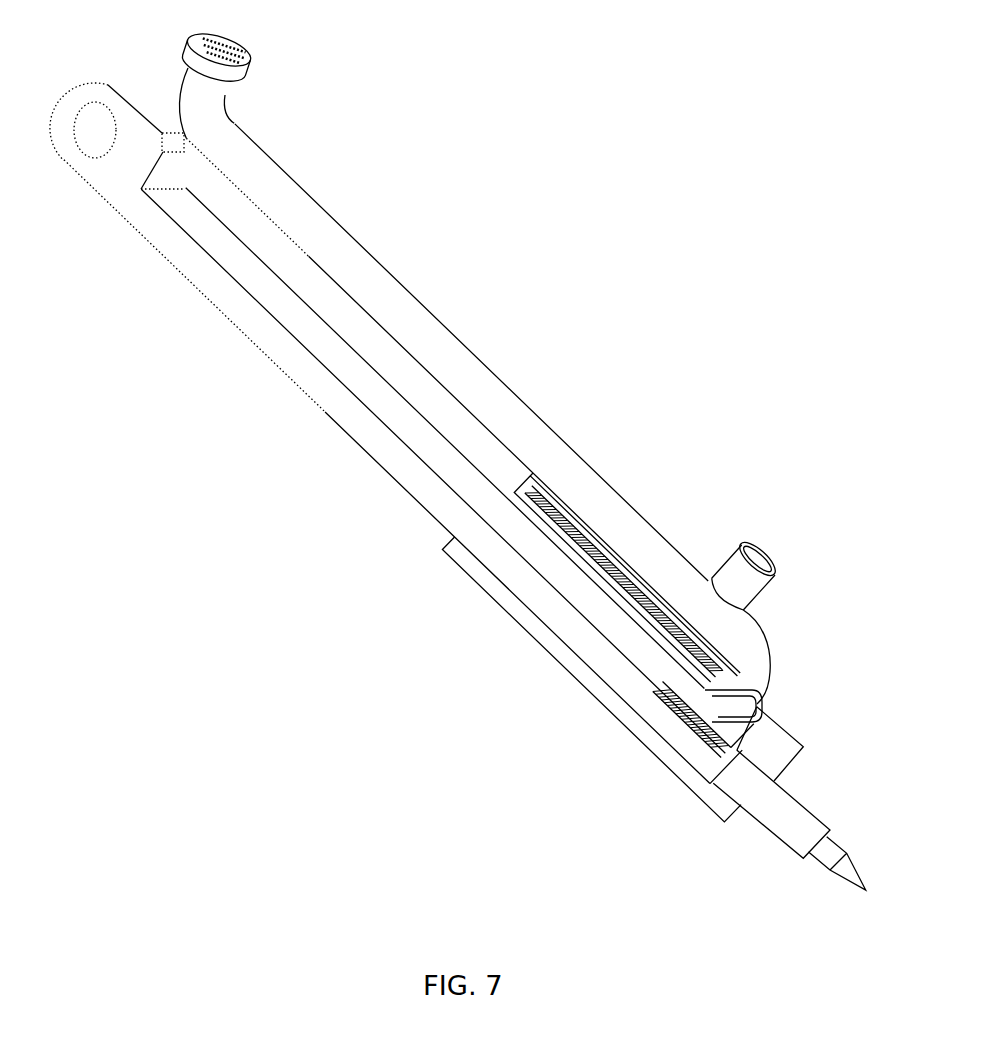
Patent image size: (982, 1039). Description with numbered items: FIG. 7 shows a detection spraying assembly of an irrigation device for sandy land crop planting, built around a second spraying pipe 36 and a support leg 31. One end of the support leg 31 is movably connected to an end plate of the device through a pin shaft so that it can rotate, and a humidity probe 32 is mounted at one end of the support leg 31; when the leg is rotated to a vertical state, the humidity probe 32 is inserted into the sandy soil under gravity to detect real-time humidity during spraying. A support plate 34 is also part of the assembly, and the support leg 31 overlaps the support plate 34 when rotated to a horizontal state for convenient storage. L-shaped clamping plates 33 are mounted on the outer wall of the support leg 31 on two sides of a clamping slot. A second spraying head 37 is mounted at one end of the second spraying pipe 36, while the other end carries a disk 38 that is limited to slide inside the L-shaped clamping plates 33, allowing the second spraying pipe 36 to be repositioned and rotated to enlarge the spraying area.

The support leg 31 is at (270, 313).
The humidity probe 32 is at (833, 858).
The L-shaped clamping plates 33 is at (693, 688).
The support plate 34 is at (465, 570).
The second spraying pipe 36 is at (387, 293).
The second spraying head 37 is at (227, 67).
The disk 38 is at (708, 722).